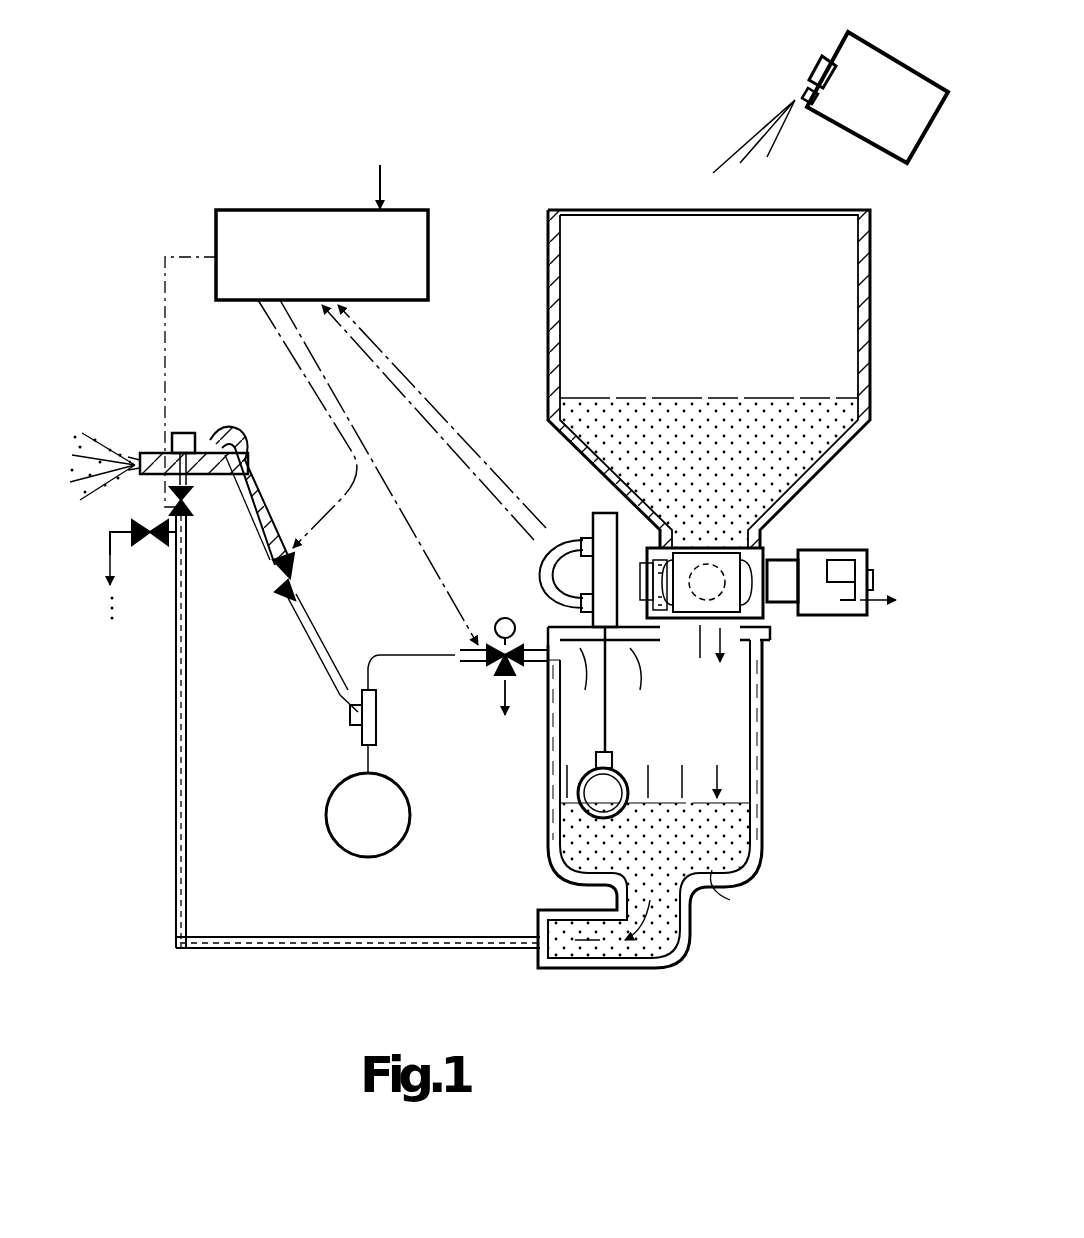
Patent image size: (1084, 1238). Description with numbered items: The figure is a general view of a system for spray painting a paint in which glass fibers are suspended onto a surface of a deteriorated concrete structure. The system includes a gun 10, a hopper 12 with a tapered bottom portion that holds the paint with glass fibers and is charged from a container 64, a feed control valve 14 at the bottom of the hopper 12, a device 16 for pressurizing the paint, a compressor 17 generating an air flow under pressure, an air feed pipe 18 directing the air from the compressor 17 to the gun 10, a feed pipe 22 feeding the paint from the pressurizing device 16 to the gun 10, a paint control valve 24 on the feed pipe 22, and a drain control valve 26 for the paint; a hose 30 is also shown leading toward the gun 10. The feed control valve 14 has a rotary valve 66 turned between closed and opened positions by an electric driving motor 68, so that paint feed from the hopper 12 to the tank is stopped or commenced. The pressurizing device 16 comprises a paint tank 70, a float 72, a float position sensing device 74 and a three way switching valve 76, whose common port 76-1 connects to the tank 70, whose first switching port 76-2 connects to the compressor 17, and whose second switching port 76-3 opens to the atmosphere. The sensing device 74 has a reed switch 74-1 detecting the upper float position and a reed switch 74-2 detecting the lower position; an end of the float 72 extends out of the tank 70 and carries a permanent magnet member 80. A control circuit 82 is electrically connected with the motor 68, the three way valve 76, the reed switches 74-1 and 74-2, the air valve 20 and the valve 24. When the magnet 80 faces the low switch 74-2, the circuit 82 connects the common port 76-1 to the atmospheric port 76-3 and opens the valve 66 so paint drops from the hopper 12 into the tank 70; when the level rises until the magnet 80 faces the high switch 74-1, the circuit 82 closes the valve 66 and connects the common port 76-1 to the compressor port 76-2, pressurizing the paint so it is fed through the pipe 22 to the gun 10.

The gun 10 is at (252, 428).
The hopper 12 is at (552, 358).
The feed control valve 14 is at (783, 598).
The device for pressurizing the paint 16 is at (546, 790).
The device for generating an air flow 17 is at (410, 815).
The air feed pipe 18 is at (340, 633).
The air valve 20 is at (298, 572).
The feed pipe 22 is at (338, 952).
The paint control valve 24 is at (200, 515).
The drain control valve 26 is at (140, 545).
The powder hose 30 is at (250, 525).
The container 64 is at (900, 60).
The rotary valve 66 is at (742, 600).
The electric driving motor 68 is at (830, 605).
The paint tank 70 is at (752, 828).
The float 72 is at (622, 772).
The float position sensing device 74 is at (550, 515).
The reed switch 74-1 is at (580, 538).
The reed switch 74-2 is at (583, 598).
The three way switching valve 76 is at (458, 671).
The common port 76-1 is at (525, 665).
The first switching port 76-2 is at (478, 640).
The second switching port 76-3 is at (497, 672).
The permanent magnet member 80 is at (564, 574).
The control circuit 82 is at (302, 210).